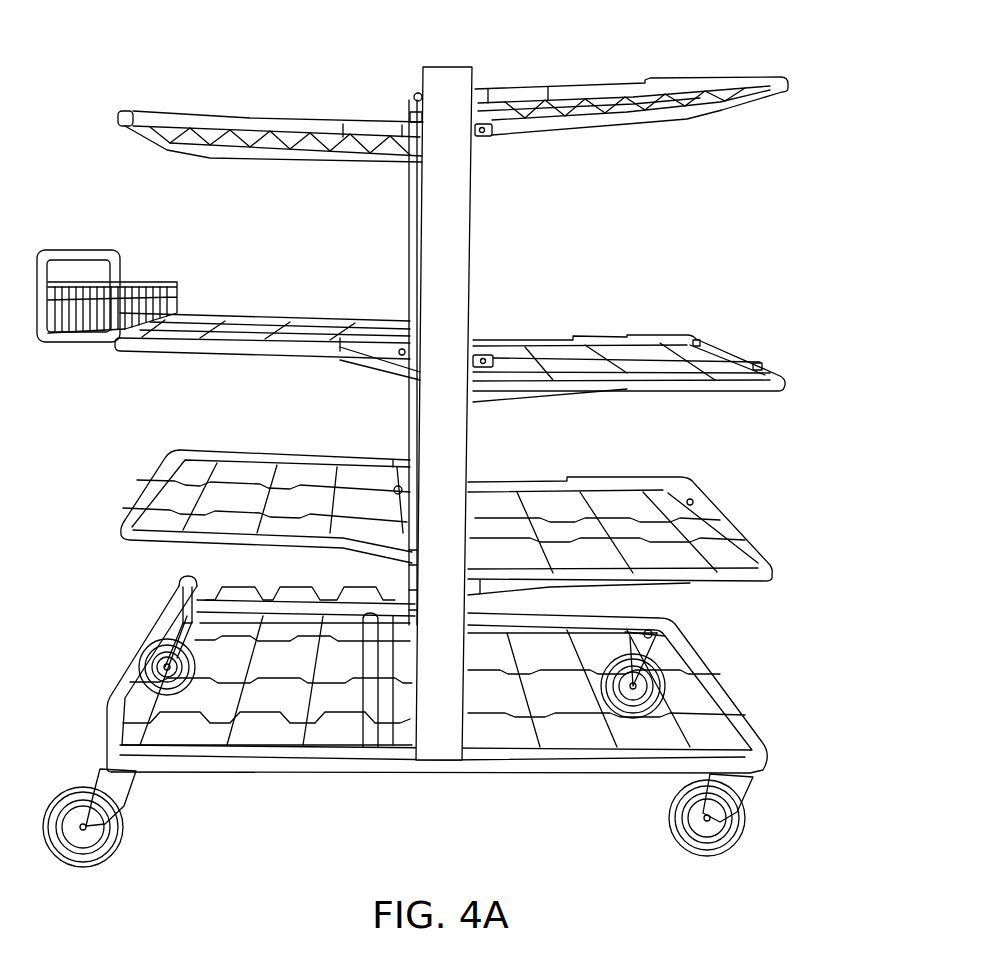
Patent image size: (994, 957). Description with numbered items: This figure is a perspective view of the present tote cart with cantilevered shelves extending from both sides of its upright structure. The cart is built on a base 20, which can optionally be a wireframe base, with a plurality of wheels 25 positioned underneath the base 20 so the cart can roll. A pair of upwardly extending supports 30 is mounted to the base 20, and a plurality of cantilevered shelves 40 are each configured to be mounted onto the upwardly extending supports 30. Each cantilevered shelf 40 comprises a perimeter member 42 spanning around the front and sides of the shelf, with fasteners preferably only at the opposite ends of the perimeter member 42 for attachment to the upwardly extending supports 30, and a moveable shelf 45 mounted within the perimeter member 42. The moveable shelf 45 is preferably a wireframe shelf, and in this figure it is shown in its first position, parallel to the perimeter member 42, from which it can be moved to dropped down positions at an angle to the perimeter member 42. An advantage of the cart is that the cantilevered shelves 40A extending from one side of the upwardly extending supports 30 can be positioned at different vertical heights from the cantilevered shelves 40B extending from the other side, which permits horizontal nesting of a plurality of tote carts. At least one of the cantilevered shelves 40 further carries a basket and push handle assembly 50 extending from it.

The base 20 is at (728, 690).
The wheels 25 is at (750, 820).
The upwardly extending supports 30 is at (472, 215).
The cantilevered shelves 40 is at (471, 302).
The cantilevered shelves 40A is at (713, 125).
The cantilevered shelves 40B is at (285, 167).
The perimeter member 42 is at (162, 472).
The moveable shelf 45 is at (297, 510).
The basket and push handle assembly 50 is at (81, 239).